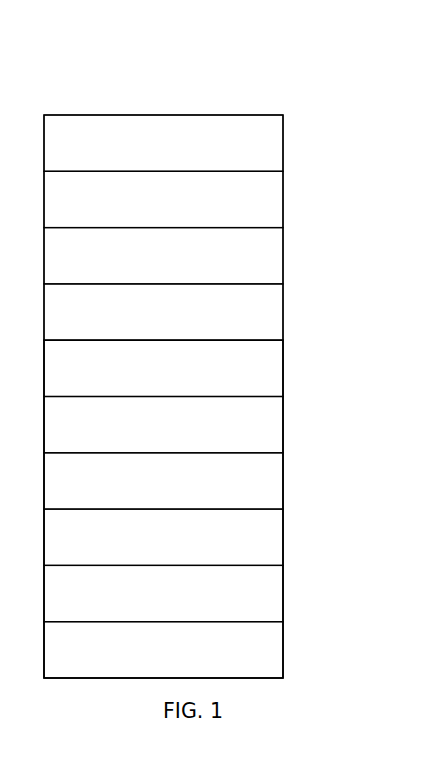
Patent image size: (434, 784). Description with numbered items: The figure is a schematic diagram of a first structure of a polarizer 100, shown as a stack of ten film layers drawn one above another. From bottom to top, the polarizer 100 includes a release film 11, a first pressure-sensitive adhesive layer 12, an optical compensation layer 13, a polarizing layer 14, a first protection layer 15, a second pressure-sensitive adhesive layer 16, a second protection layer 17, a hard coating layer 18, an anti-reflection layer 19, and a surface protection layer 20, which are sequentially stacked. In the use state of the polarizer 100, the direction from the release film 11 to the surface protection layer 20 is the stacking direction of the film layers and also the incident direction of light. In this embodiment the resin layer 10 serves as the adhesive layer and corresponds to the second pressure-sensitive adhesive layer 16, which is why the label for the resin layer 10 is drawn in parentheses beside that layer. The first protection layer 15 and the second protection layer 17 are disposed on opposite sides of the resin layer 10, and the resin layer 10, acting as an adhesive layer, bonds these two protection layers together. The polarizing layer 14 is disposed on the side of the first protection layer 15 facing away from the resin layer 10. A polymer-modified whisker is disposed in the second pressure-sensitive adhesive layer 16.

The polarizer 100 is at (110, 64).
The resin layer 10 is at (193, 509).
The release film 11 is at (267, 654).
The first pressure-sensitive adhesive layer 12 is at (267, 597).
The optical compensation layer 13 is at (267, 541).
The polarizing layer 14 is at (267, 485).
The first protection layer 15 is at (267, 428).
The second pressure-sensitive adhesive layer 16 is at (267, 372).
The second protection layer 17 is at (267, 316).
The hard coating layer 18 is at (267, 260).
The anti-reflection layer 19 is at (267, 203).
The surface protection layer 20 is at (267, 147).